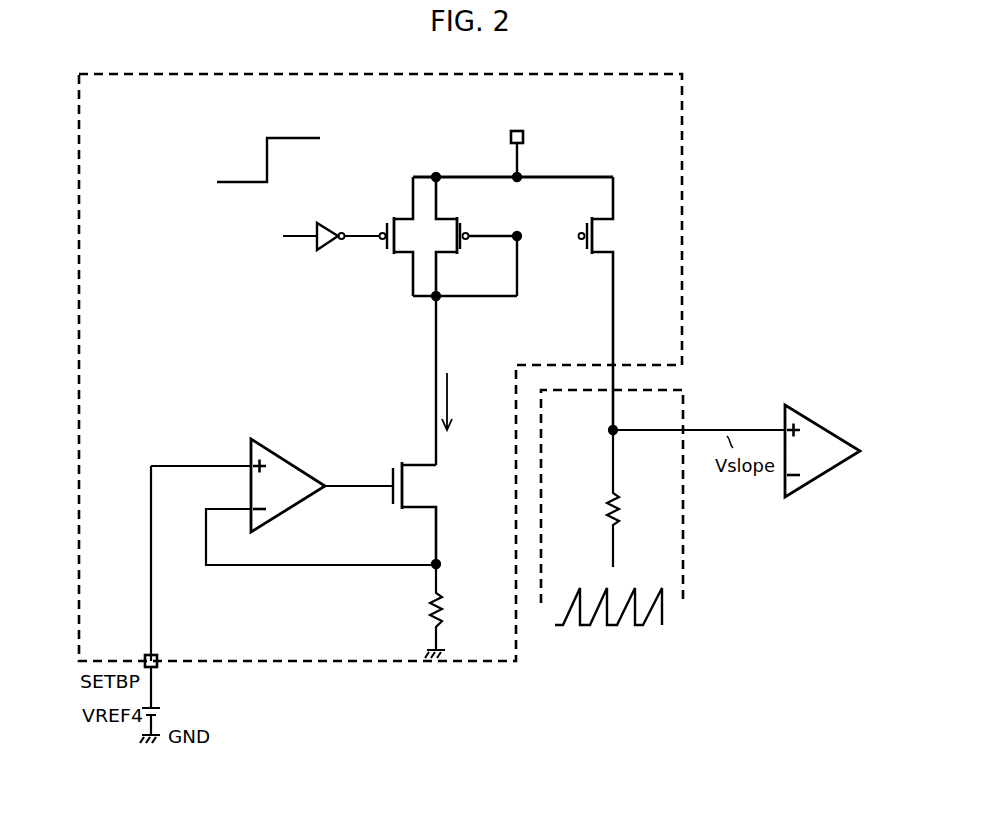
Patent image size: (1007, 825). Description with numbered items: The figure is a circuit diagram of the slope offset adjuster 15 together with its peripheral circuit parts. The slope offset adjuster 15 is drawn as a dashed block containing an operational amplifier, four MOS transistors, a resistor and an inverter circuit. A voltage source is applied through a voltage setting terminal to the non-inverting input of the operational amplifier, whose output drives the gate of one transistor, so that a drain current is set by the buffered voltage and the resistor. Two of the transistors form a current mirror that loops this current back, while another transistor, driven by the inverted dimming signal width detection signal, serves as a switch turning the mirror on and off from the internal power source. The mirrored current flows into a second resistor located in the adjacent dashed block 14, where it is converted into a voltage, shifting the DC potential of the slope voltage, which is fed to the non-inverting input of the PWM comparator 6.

The slope offset adjuster 15 is at (682, 74).
The slope voltage generating circuit 14 is at (683, 390).
The PWM comparator 6 is at (815, 418).